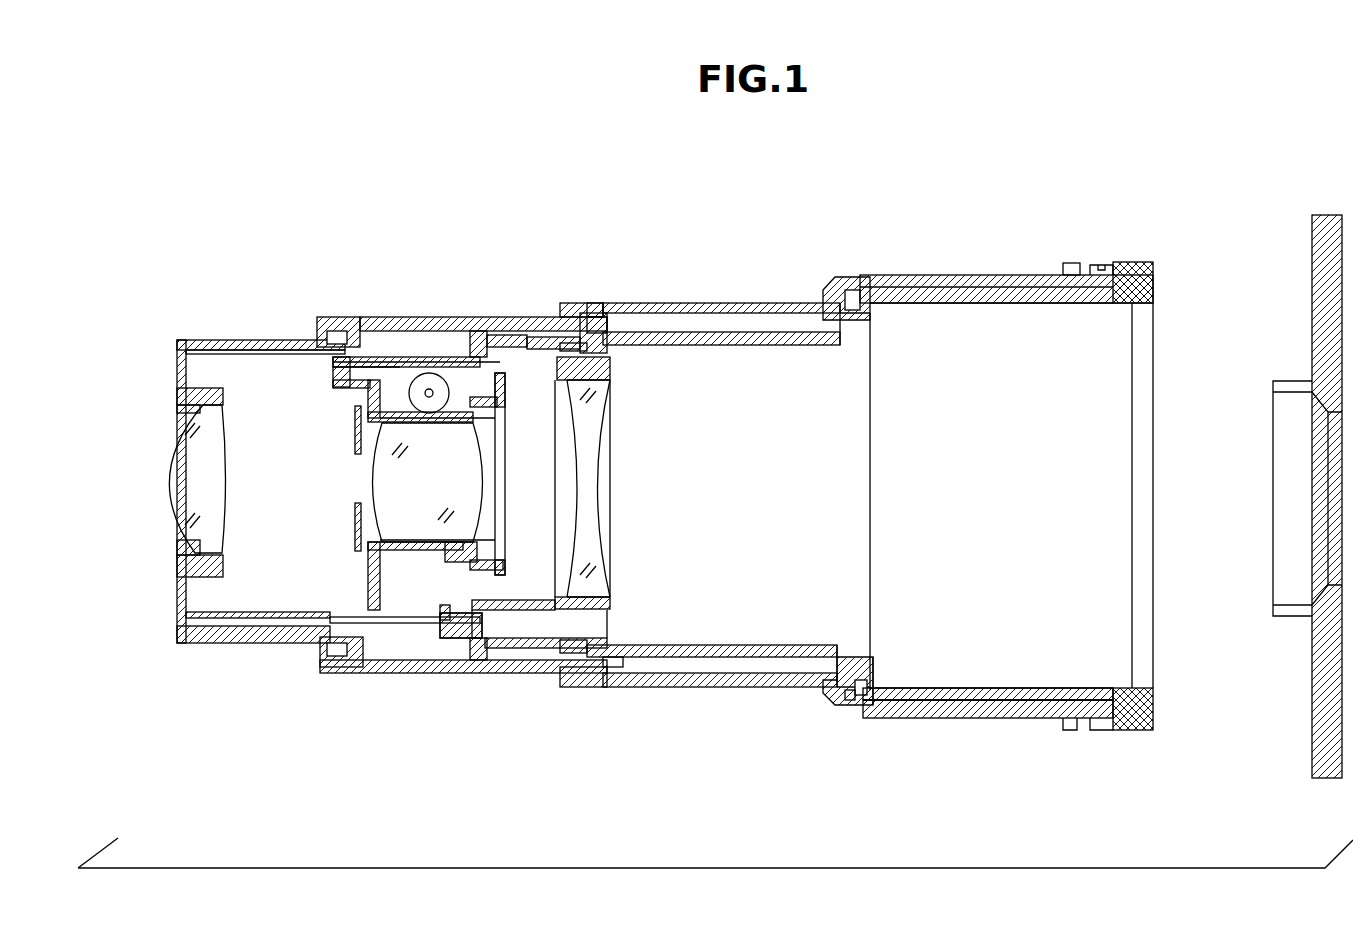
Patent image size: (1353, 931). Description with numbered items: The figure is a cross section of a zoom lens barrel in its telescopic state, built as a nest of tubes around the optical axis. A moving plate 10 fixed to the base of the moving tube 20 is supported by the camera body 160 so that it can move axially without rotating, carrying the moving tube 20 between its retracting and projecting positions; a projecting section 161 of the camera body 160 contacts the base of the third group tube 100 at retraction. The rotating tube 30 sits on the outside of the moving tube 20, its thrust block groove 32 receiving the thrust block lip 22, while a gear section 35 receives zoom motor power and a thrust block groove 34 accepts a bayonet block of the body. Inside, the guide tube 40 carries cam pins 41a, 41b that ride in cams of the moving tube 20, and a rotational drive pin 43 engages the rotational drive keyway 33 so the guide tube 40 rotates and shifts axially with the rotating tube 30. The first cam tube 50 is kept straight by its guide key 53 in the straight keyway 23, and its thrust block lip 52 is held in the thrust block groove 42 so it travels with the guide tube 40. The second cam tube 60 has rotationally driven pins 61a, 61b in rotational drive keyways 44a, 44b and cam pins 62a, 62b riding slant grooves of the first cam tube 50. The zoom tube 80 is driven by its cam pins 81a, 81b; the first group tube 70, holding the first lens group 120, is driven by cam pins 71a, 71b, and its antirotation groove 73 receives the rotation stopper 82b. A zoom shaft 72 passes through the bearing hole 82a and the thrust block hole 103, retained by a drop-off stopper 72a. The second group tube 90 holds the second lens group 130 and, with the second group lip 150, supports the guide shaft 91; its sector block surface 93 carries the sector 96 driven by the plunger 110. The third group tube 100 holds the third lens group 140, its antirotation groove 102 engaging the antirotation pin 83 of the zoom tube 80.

The moving plate 10 is at (1150, 730).
The moving tube 20 is at (1005, 303).
The thrust block lip 22 is at (862, 295).
The straight keyway 23 is at (1080, 730).
The rotating tube 30 is at (1040, 718).
The thrust block groove 32 is at (842, 285).
The rotational drive keyway 33 is at (980, 718).
The thrust block groove 34 is at (1070, 263).
The gear section 35 is at (1100, 265).
The guide tube 40 is at (770, 687).
The cam pin 41a is at (870, 705).
The cam pin 41b is at (872, 310).
The thrust block groove 42 is at (842, 705).
The rotational drive pin 43 is at (878, 708).
The rotational drive keyway 44a is at (728, 687).
The rotational drive keyway 44b is at (700, 303).
The first cam tube 50 is at (845, 675).
The thrust block lip 52 is at (868, 678).
The guide key 53 is at (855, 705).
The second cam tube 60 is at (560, 665).
The rotationally driven pin 61a is at (595, 687).
The rotationally driven pin 61b is at (595, 303).
The cam pin 62a is at (610, 648).
The cam pin 62b is at (605, 345).
The first group tube 70 is at (205, 643).
The cam pin 71a is at (340, 667).
The cam pin 71b is at (340, 318).
The zoom shaft 72 is at (275, 620).
The drop-off stopper 72a is at (488, 628).
The antirotation groove 73 is at (252, 350).
The zoom tube 80 is at (490, 673).
The cam pin 81a is at (528, 673).
The cam pin 81b is at (480, 331).
The bearing hole 82a is at (455, 660).
The rotation stopper 82b is at (417, 335).
The antirotation pin 83 is at (515, 337).
The second group tube 90 is at (435, 620).
The guide shaft 91 is at (383, 358).
The sector block surface 93 is at (420, 650).
The sector 96 is at (355, 432).
The third group tube 100 is at (585, 607).
The antirotation groove 102 is at (583, 345).
The thrust block hole 103 is at (478, 618).
The plunger 110 is at (430, 393).
The first lens group 120 is at (175, 500).
The second lens group 130 is at (380, 525).
The third lens group 140 is at (592, 545).
The second group lip 150 is at (520, 405).
The camera body 160 is at (1325, 778).
The projecting section 161 is at (1280, 616).